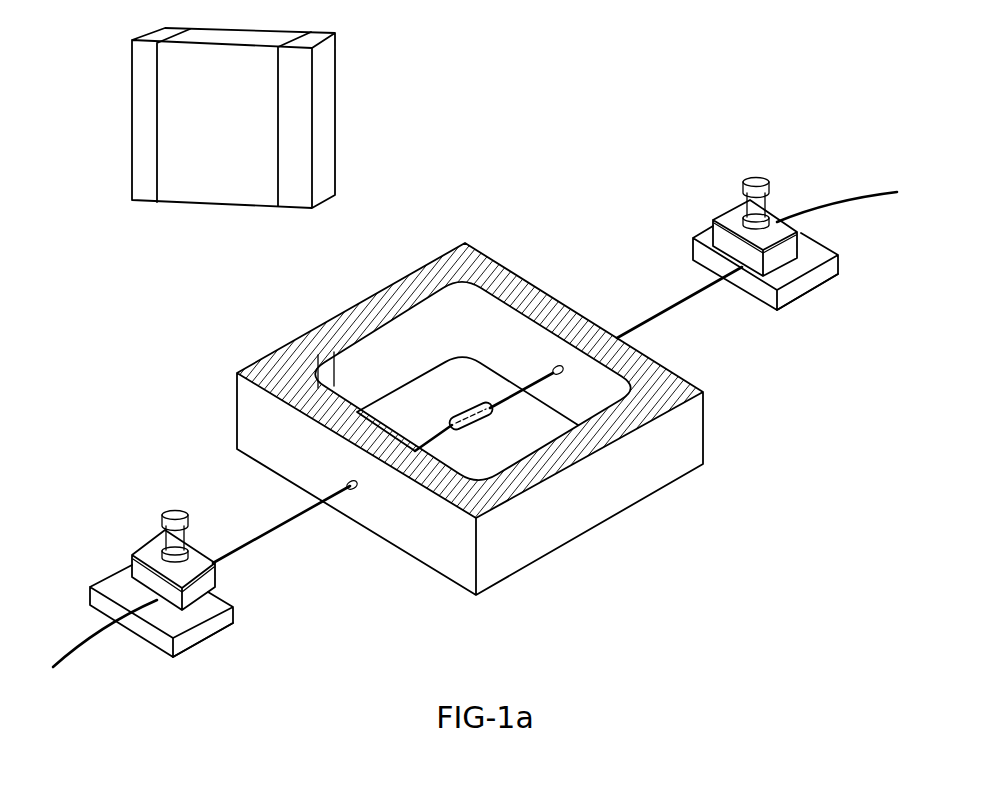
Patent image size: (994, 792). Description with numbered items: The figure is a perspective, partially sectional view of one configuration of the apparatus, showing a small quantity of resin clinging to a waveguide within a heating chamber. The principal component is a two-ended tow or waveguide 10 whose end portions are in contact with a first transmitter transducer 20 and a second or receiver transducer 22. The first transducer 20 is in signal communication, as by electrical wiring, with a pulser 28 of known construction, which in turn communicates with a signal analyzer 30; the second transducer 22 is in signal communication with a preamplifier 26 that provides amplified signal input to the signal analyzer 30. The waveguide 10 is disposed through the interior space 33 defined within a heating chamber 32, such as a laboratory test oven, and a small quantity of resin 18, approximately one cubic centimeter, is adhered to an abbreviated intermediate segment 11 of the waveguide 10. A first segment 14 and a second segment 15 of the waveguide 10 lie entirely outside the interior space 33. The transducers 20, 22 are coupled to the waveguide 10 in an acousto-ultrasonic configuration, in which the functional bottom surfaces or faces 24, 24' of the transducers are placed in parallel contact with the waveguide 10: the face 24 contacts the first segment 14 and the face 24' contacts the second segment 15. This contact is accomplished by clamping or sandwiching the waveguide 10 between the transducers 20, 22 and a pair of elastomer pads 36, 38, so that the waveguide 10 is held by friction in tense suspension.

The waveguide 10 is at (273, 530).
The intermediate segment 11 is at (452, 416).
The first segment 14 is at (155, 599).
The second segment 15 is at (737, 272).
The resin 18 is at (493, 421).
The first transmitter transducer 20 is at (152, 553).
The second or receiver transducer 22 is at (780, 232).
The face 24 is at (212, 632).
The face 24' is at (766, 312).
The preamplifier 26 is at (298, 190).
The pulser 28 is at (145, 189).
The signal analyzer 30 is at (223, 190).
The heating chamber 32 is at (615, 498).
The interior space 33 is at (490, 458).
The elastomer pad 36 is at (200, 638).
The elastomer pad 38 is at (820, 278).